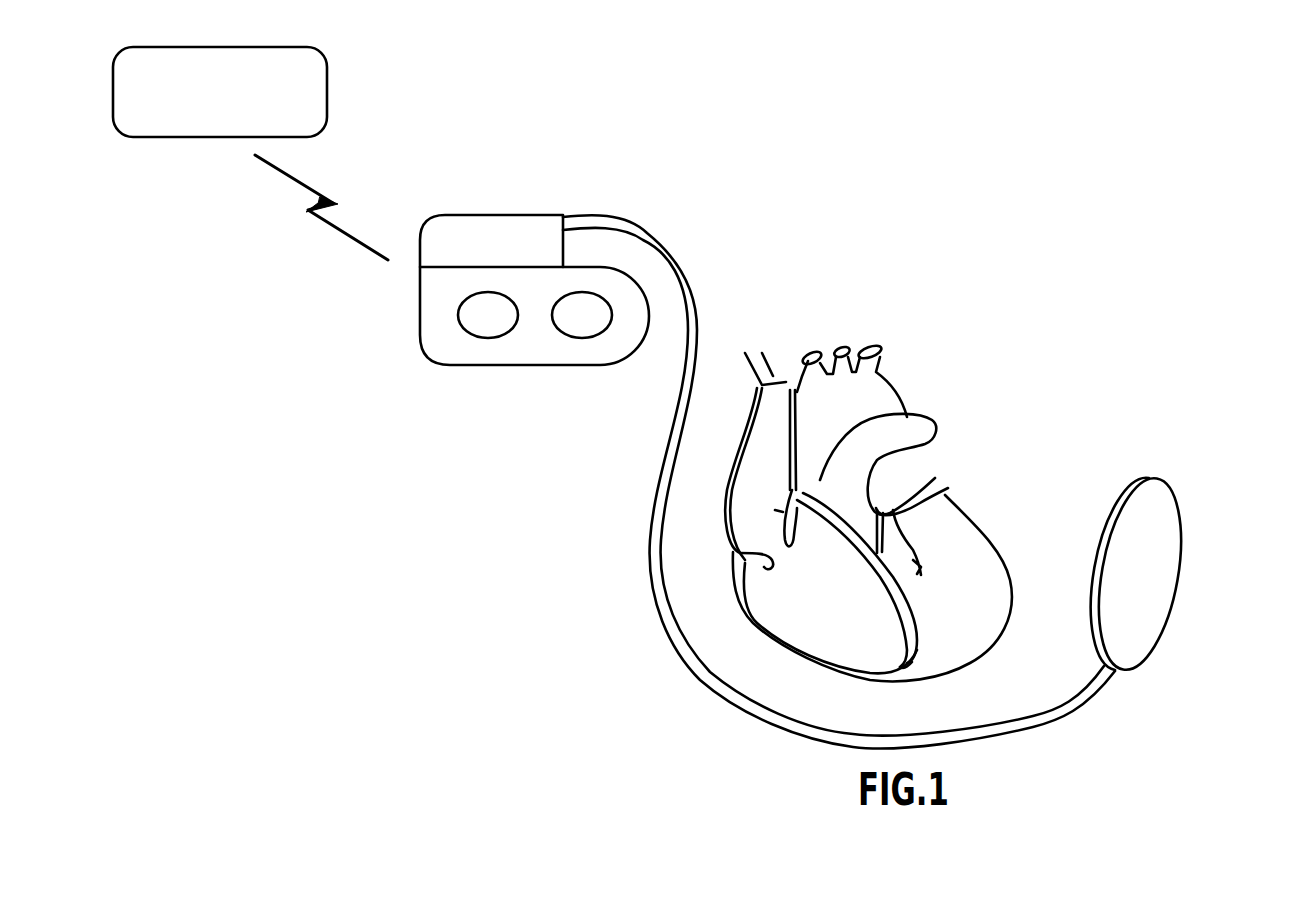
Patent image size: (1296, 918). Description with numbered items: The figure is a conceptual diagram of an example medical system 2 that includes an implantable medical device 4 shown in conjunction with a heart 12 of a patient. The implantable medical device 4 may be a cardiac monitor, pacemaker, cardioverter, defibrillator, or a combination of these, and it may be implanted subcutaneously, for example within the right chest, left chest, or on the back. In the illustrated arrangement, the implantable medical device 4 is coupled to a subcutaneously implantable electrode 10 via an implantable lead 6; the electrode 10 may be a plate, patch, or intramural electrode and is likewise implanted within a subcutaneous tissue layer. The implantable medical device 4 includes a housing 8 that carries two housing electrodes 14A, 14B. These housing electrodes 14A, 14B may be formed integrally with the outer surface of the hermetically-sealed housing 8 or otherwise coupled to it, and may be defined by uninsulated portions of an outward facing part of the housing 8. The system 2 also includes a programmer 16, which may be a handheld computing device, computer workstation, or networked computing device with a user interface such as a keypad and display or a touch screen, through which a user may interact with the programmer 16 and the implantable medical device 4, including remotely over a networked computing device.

The medical system 2 is at (1018, 147).
The implantable medical device 4 is at (490, 213).
The implantable lead 6 is at (677, 390).
The housing 8 is at (432, 314).
The subcutaneously implantable electrode 10 is at (1167, 510).
The heart 12 is at (973, 533).
The housing electrode 14A is at (478, 328).
The housing electrode 14B is at (578, 323).
The programmer 16 is at (250, 153).